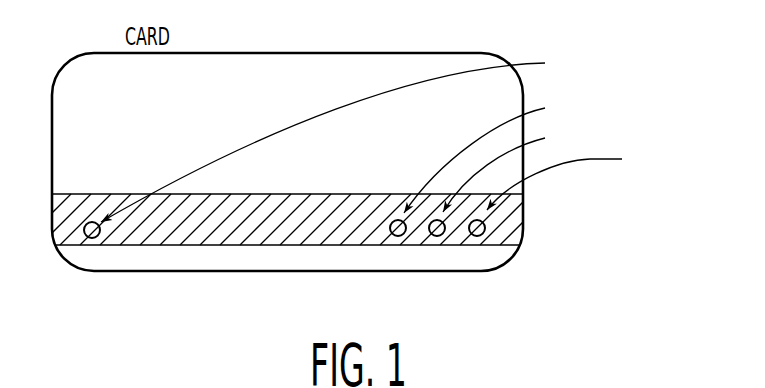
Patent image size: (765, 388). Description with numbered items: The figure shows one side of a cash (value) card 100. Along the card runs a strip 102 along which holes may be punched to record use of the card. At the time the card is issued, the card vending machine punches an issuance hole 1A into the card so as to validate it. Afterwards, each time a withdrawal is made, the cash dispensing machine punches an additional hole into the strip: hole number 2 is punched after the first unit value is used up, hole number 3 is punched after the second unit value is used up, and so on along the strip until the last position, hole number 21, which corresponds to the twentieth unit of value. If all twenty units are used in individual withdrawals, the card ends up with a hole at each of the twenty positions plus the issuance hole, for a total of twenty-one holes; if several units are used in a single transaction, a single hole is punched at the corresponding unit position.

The card 100 is at (96, 90).
The strip 102 is at (53, 243).
The hole number 21 is at (92, 238).
The hole number 3 is at (397, 236).
The hole number 2 is at (437, 236).
The issuance hole 1A is at (477, 236).